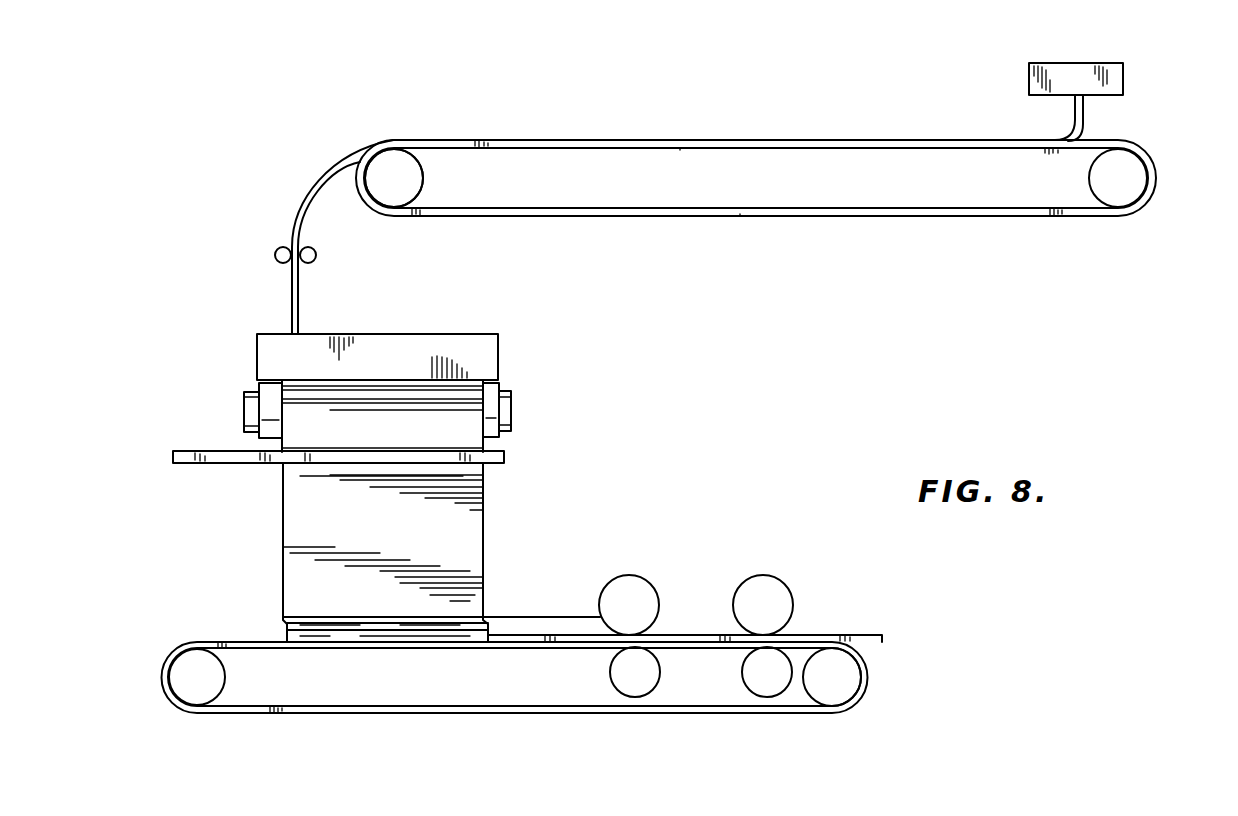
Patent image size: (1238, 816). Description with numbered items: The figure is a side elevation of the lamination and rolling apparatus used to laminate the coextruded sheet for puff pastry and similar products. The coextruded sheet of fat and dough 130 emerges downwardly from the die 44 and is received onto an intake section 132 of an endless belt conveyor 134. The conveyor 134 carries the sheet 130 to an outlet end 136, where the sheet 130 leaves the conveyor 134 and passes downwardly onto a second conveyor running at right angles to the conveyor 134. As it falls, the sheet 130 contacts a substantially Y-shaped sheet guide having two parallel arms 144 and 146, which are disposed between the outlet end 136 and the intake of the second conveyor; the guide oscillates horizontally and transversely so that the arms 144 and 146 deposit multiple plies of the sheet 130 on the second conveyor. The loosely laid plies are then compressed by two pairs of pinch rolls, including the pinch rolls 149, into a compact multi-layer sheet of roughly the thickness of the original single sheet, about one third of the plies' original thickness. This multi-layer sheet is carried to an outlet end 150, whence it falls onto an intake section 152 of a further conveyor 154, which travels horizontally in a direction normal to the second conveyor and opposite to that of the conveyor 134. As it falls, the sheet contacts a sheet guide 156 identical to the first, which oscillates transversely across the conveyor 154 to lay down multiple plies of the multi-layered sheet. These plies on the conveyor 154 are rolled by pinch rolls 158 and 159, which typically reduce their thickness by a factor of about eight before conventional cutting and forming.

The die 44 is at (1108, 89).
The coextruded sheet of fat and dough 130 is at (1084, 121).
The intake section 132 is at (1055, 148).
The endless belt conveyor 134 is at (818, 219).
The outlet end 136 is at (357, 176).
The arm 144 is at (277, 262).
The arm 146 is at (316, 257).
The pinch rolls 149 is at (470, 357).
The outlet end 150 is at (490, 417).
The intake section 152 is at (378, 645).
The further conveyor 154 is at (551, 722).
The sheet guide 156 is at (228, 466).
The pinch rolls 158 is at (641, 665).
The pinch rolls 159 is at (763, 663).